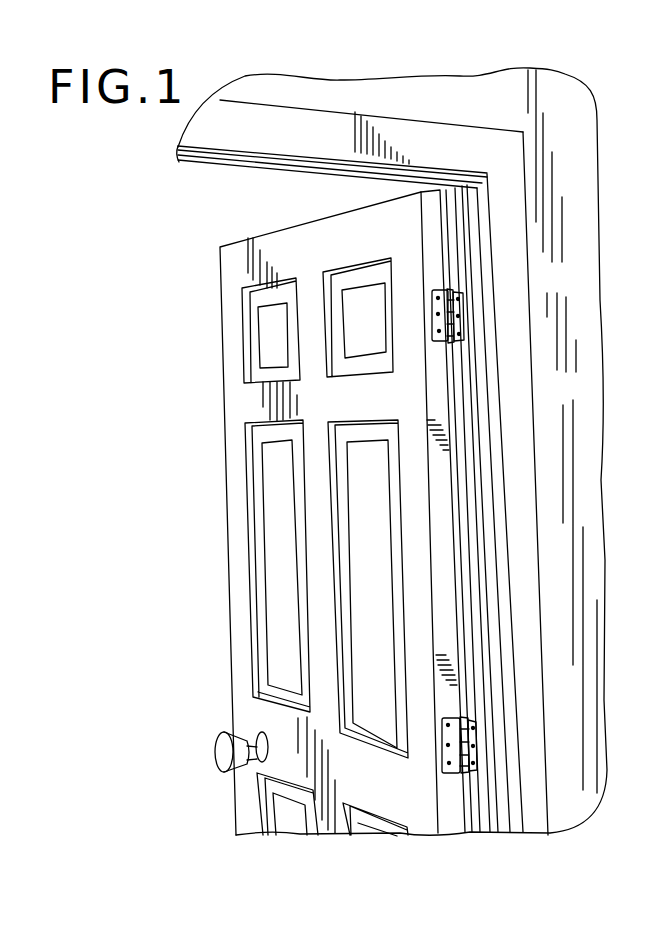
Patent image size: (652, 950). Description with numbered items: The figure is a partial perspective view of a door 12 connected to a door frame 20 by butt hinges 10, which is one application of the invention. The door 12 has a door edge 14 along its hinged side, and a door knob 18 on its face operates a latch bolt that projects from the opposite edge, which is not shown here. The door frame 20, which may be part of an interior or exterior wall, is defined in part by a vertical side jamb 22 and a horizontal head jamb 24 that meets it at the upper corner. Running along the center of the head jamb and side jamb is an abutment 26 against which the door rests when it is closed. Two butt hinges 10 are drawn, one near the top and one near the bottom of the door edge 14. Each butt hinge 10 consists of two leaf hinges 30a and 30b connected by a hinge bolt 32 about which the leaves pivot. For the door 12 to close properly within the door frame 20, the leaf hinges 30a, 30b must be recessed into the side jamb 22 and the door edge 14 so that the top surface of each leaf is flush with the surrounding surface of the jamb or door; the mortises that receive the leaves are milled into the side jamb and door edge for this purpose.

The butt hinge 10 is at (479, 538).
The door 12 is at (240, 577).
The door edge 14 is at (440, 542).
The door knob 18 is at (223, 745).
The door frame 20 is at (210, 133).
The side jamb 22 is at (492, 510).
The head jamb 24 is at (298, 160).
The abutment 26 is at (365, 172).
The leaf hinge 30a is at (440, 327).
The leaf hinge 30b is at (457, 308).
The hinge bolt 32 is at (448, 290).